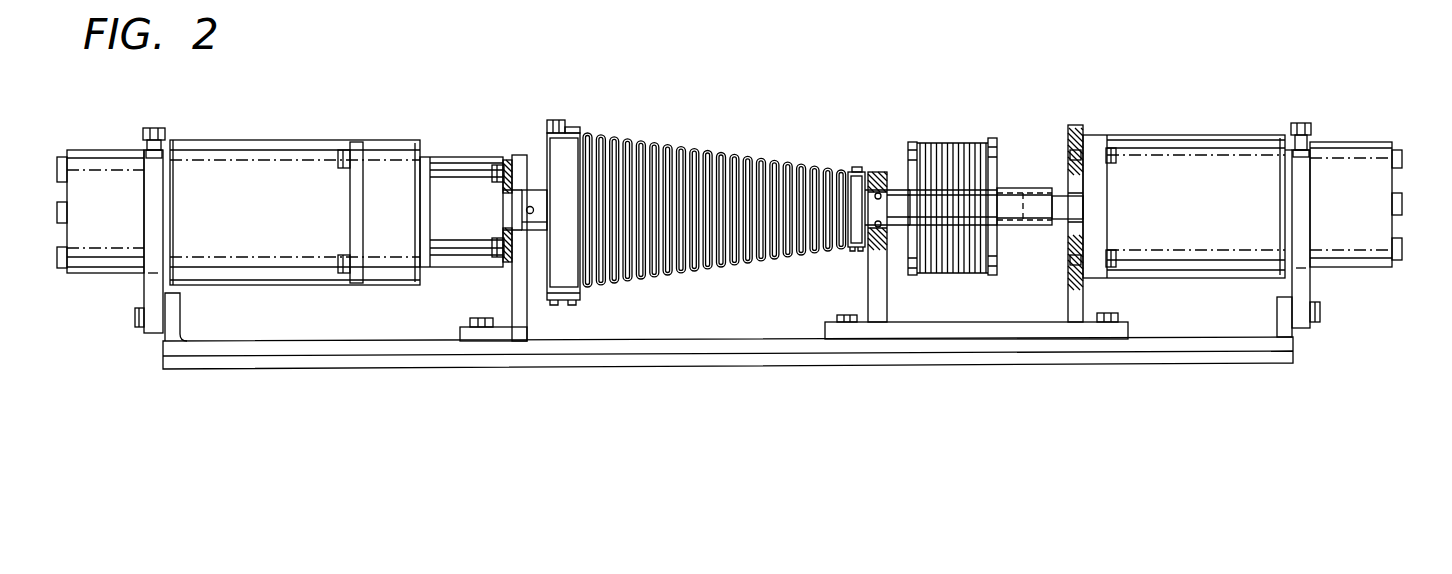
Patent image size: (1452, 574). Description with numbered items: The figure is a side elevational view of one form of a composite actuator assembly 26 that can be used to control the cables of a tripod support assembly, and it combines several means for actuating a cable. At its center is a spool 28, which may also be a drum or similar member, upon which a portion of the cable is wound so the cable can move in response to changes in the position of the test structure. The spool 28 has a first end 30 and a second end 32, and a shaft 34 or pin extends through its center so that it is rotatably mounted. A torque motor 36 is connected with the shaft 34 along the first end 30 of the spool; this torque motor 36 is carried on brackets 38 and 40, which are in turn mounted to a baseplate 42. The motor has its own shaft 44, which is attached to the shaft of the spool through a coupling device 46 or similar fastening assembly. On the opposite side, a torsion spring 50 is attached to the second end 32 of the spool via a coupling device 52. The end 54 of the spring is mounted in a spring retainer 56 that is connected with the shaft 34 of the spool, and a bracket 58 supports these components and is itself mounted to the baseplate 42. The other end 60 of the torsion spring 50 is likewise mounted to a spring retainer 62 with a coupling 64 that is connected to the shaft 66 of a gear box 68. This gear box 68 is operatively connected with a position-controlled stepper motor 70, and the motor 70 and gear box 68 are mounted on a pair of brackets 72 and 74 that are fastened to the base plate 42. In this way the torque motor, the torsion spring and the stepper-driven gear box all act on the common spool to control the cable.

The composite actuator assembly 26 is at (1322, 100).
The spool 28 is at (940, 143).
The first end 30 is at (998, 140).
The second end 32 is at (906, 148).
The shaft 34 is at (1004, 208).
The torque motor 36 is at (1160, 135).
The bracket 38 is at (1318, 290).
The bracket 40 is at (1086, 300).
The baseplate 42 is at (1068, 357).
The shaft 44 is at (1062, 225).
The coupling device 46 is at (1032, 188).
The torsion spring 50 is at (707, 152).
The coupling device 52 is at (893, 228).
The end 54 is at (837, 185).
The spring retainer 56 is at (850, 175).
The bracket 58 is at (866, 273).
The other end 60 is at (585, 171).
The spring retainer 62 is at (553, 120).
The coupling 64 is at (535, 188).
The shaft 66 is at (517, 188).
The gear box 68 is at (462, 155).
The position-controlled (stepper) motor 70 is at (240, 148).
The bracket 72 is at (512, 288).
The bracket 74 is at (170, 297).